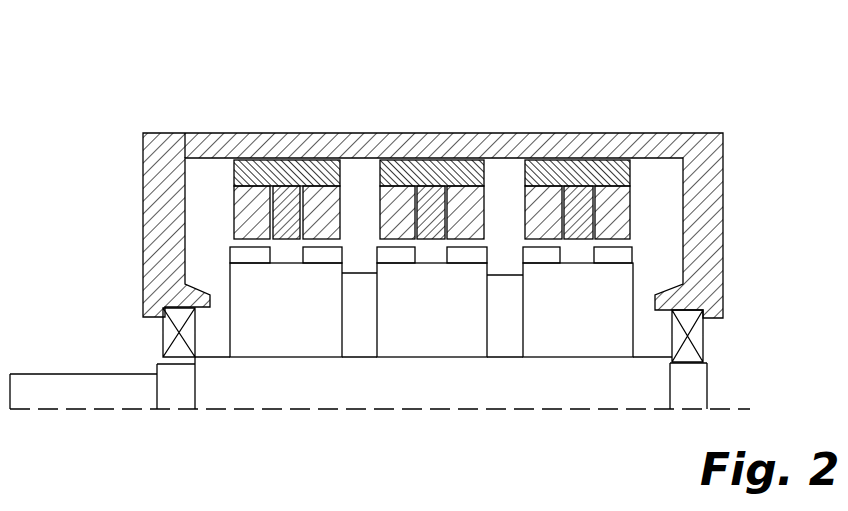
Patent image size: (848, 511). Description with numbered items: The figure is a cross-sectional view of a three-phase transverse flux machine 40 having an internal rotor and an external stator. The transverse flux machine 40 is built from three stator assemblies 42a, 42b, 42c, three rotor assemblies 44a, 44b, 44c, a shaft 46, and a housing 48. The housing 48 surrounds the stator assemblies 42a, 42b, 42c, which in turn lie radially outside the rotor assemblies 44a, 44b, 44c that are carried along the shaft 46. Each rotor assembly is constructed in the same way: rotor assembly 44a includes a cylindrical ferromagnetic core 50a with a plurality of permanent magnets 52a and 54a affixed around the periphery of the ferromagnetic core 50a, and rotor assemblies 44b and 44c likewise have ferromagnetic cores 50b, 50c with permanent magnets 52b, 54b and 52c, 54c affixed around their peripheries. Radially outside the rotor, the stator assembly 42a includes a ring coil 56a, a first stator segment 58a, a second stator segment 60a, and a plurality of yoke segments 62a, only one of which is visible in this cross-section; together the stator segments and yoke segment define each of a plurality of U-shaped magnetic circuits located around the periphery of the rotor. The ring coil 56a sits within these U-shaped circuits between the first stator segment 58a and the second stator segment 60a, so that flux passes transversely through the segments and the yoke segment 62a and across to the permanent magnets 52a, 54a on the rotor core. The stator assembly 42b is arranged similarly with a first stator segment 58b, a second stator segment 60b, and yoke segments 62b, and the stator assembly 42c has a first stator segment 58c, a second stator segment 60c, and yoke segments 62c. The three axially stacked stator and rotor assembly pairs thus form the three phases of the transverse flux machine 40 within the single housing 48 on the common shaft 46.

The transverse flux machine 40 is at (178, 100).
The stator assembly 42a is at (282, 156).
The stator assembly 42b is at (445, 166).
The stator assembly 42c is at (590, 168).
The rotor assembly 44a is at (352, 342).
The rotor assembly 44b is at (508, 340).
The rotor assembly 44c is at (652, 330).
The shaft 46 is at (86, 391).
The housing 48 is at (707, 150).
The cylindrical ferromagnetic core 50a is at (258, 345).
The cylindrical ferromagnetic core 50b is at (423, 340).
The cylindrical ferromagnetic core 50c is at (578, 337).
The permanent magnet 52a is at (245, 255).
The permanent magnet 52b is at (390, 257).
The permanent magnet 52c is at (535, 255).
The permanent magnet 54a is at (333, 253).
The permanent magnet 54b is at (470, 255).
The permanent magnet 54c is at (618, 255).
The ring coil 56a is at (288, 200).
The first stator segment 58a is at (240, 205).
The first stator segment 58b is at (392, 200).
The first stator segment 58c is at (537, 200).
The second stator segment 60a is at (322, 237).
The second stator segment 60b is at (467, 236).
The second stator segment 60c is at (620, 236).
The yoke segment 62a is at (241, 170).
The yoke segment 62b is at (427, 172).
The yoke segment 62c is at (605, 172).